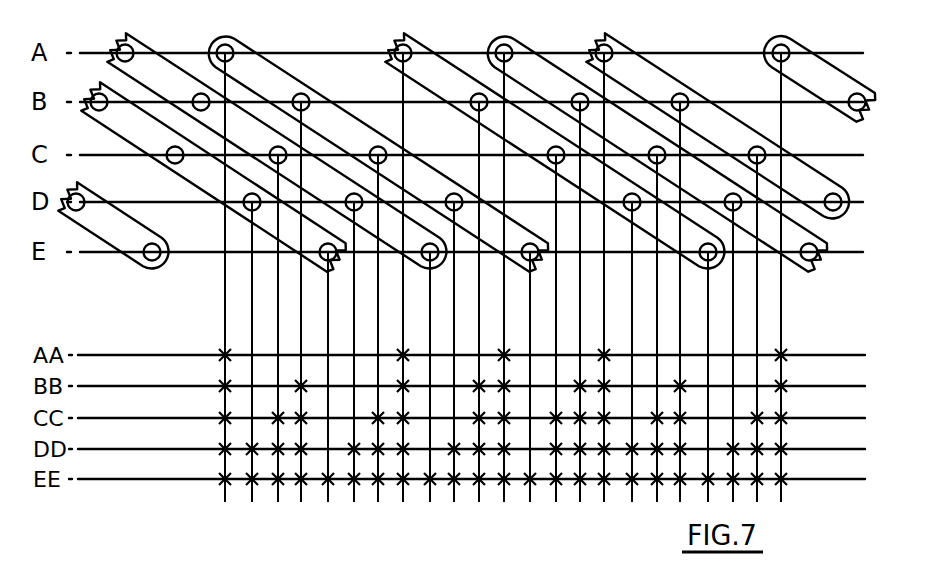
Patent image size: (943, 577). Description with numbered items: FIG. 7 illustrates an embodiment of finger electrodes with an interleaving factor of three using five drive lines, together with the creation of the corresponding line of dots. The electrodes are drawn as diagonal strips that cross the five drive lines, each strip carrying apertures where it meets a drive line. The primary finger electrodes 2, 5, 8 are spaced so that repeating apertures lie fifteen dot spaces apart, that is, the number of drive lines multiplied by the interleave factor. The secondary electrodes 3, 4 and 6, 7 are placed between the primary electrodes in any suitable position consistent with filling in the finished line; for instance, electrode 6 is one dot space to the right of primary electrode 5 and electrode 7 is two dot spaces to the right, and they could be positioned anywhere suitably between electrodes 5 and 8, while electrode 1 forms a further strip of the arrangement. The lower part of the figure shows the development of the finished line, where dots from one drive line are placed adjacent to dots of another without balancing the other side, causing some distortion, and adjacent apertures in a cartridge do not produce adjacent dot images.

The finger electrode 1 is at (143, 231).
The primary finger electrode 2 is at (104, 118).
The secondary electrode 3 is at (143, 50).
The secondary electrode 4 is at (244, 50).
The primary finger electrode 5 is at (424, 62).
The secondary electrode 6 is at (531, 62).
The secondary electrode 7 is at (627, 63).
The primary finger electrode 8 is at (763, 44).